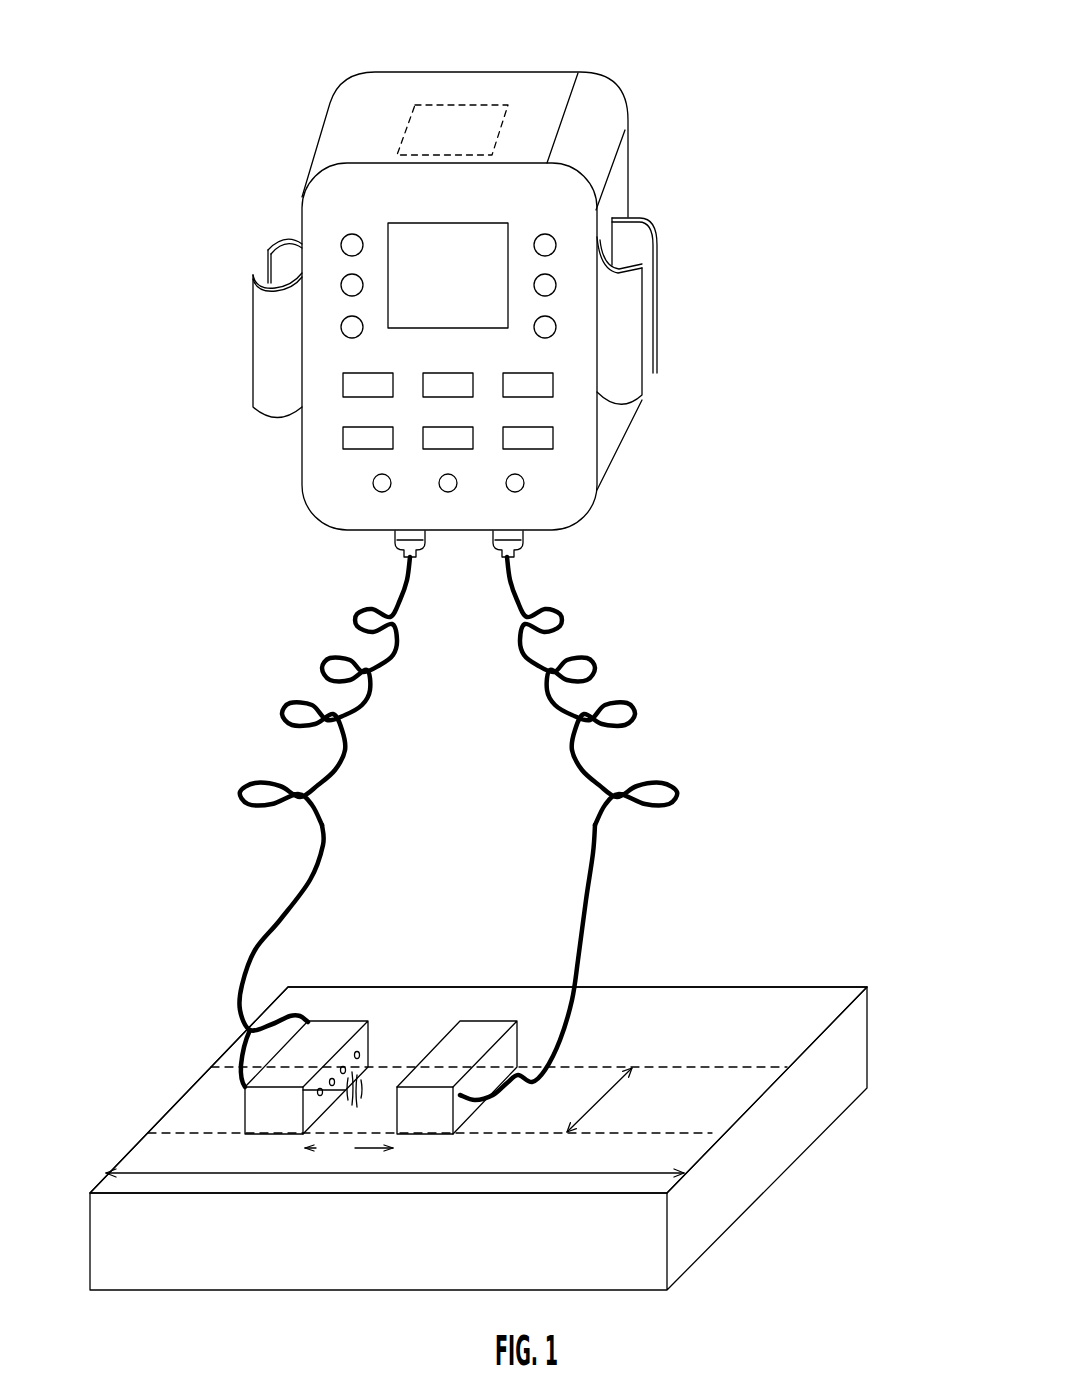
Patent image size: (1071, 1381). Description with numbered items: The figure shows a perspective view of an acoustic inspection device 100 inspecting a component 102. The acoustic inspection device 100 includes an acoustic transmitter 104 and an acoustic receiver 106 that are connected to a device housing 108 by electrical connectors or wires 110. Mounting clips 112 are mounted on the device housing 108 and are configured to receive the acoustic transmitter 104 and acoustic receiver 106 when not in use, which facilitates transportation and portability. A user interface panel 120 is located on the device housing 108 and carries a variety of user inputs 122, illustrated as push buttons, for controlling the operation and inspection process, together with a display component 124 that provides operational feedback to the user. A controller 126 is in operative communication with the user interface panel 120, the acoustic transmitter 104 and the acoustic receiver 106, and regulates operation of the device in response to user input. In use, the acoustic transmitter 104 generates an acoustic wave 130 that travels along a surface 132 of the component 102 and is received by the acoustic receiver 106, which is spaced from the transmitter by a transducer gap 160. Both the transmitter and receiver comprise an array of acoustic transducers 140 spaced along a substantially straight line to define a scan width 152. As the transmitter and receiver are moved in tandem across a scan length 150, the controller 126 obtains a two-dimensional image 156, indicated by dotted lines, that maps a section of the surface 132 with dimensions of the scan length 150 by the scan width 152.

The acoustic inspection device 100 is at (850, 95).
The component 102 is at (420, 985).
The acoustic transmitter 104 is at (330, 1060).
The acoustic receiver 106 is at (478, 1060).
The device housing 108 is at (613, 430).
The electrical connectors or wires 110 is at (283, 711).
The mounting clips 112 is at (285, 252).
The user interface panel 120 is at (540, 200).
The user inputs 122 is at (352, 234).
The display components 124 is at (467, 284).
The controller 126 is at (506, 105).
The acoustic wave 130 is at (363, 1092).
The surface 132 is at (670, 1005).
The acoustic transducers 140 is at (362, 1053).
The scan length 150 is at (532, 1173).
The scan width 152 is at (601, 1106).
The two-dimensional image 156 is at (692, 1067).
The transducer gap 160 is at (349, 1148).